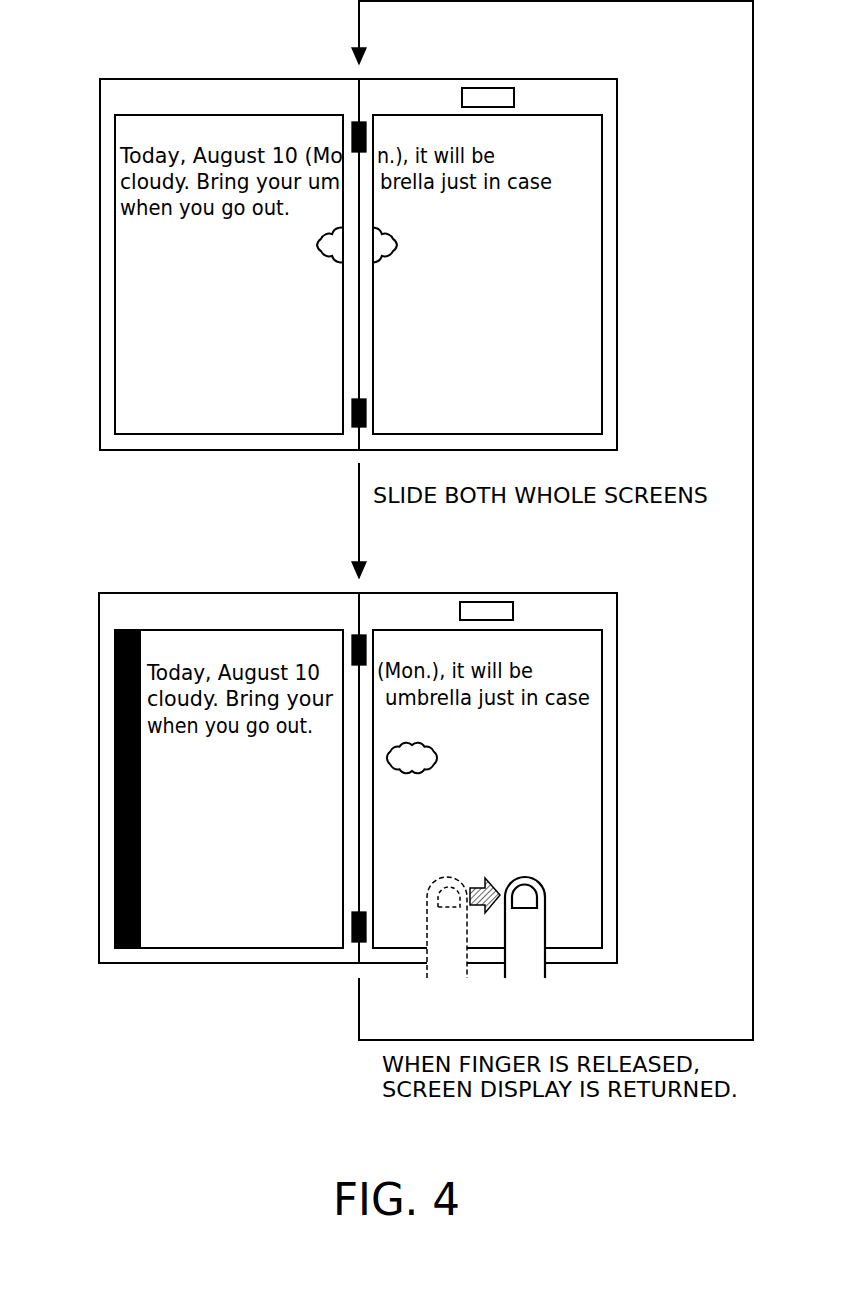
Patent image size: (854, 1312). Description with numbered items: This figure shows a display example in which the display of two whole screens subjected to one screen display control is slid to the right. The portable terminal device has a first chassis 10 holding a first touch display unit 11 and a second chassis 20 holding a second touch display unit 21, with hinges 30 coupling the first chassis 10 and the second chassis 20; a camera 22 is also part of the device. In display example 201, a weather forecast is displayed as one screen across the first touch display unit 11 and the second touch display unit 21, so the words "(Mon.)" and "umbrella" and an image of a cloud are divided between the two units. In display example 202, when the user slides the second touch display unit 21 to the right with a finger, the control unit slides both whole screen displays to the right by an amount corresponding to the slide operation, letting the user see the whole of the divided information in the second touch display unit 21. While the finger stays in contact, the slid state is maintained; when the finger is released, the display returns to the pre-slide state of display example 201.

The display example 201 is at (117, 60).
The display example 202 is at (117, 573).
The first chassis 10 is at (108, 297).
The first touch display unit 11 is at (140, 357).
The second chassis 20 is at (610, 300).
The second touch display unit 21 is at (575, 360).
The camera 22 is at (485, 98).
The hinges 30 is at (360, 122).